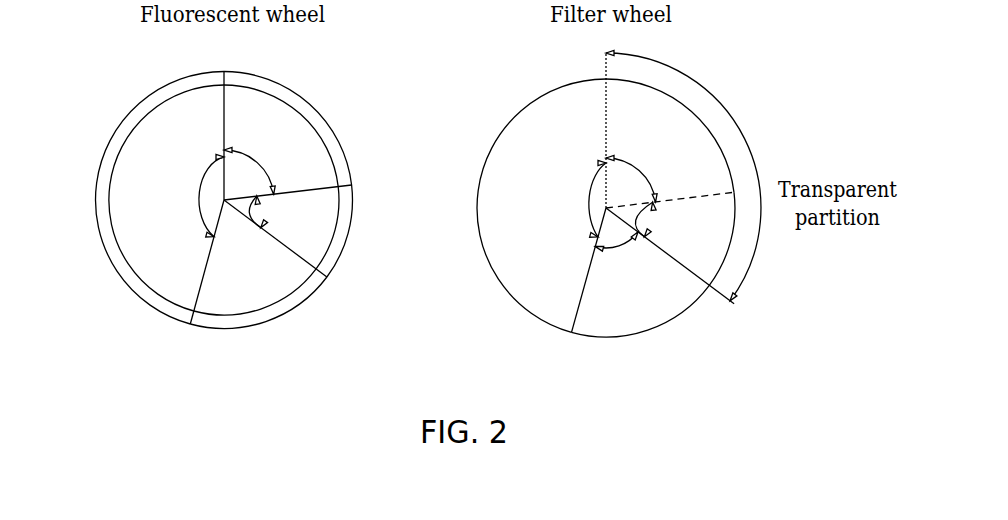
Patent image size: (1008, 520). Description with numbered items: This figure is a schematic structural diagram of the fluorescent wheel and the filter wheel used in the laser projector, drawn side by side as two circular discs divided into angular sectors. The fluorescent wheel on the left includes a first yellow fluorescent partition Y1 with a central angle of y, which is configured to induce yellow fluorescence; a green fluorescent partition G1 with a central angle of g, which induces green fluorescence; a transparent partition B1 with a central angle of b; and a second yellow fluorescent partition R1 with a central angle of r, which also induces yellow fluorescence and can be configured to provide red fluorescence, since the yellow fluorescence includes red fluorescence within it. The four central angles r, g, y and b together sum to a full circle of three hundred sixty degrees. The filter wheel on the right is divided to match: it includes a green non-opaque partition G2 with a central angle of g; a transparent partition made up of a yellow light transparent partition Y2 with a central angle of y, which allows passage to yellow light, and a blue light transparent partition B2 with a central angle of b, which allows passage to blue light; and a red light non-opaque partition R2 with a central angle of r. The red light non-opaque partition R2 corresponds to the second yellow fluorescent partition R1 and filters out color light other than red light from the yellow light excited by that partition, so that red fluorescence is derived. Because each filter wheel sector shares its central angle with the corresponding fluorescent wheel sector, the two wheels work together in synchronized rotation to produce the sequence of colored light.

The green fluorescent partition G1 is at (98, 194).
The first yellow fluorescent partition Y1 is at (325, 130).
The transparent partition B1 is at (345, 237).
The second yellow fluorescent partition R1 is at (272, 317).
The green non-opaque partition G2 is at (541, 205).
The yellow light transparent partition Y2 is at (670, 130).
The blue light transparent partition B2 is at (670, 238).
The red light non-opaque partition R2 is at (653, 272).
The central angle of green partition g is at (389, 196).
The central angle of yellow partition y is at (440, 172).
The central angle of transparent partition b is at (456, 216).
The central angle of red partition r is at (616, 253).